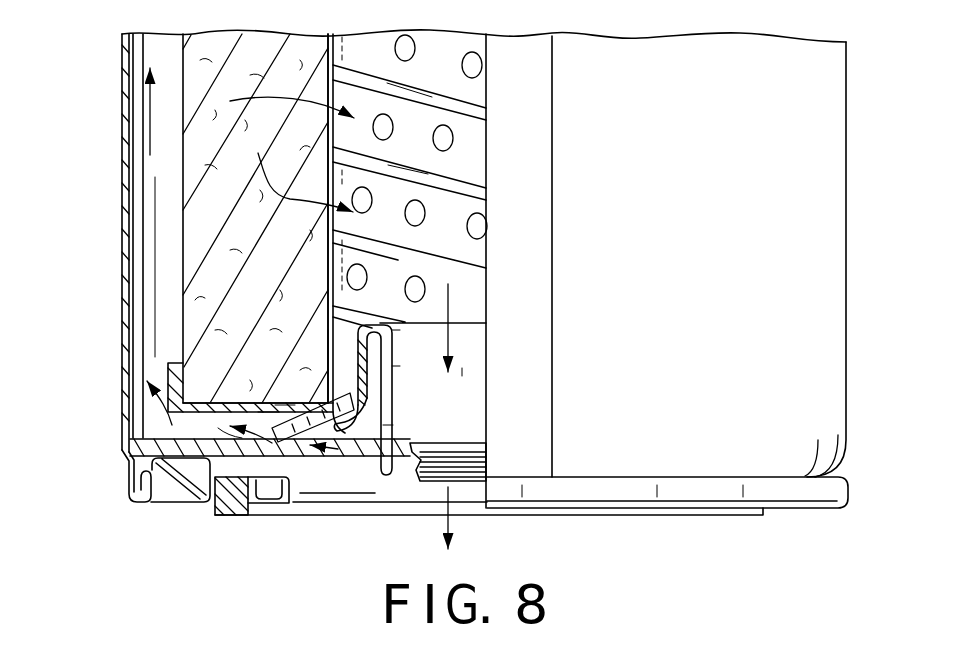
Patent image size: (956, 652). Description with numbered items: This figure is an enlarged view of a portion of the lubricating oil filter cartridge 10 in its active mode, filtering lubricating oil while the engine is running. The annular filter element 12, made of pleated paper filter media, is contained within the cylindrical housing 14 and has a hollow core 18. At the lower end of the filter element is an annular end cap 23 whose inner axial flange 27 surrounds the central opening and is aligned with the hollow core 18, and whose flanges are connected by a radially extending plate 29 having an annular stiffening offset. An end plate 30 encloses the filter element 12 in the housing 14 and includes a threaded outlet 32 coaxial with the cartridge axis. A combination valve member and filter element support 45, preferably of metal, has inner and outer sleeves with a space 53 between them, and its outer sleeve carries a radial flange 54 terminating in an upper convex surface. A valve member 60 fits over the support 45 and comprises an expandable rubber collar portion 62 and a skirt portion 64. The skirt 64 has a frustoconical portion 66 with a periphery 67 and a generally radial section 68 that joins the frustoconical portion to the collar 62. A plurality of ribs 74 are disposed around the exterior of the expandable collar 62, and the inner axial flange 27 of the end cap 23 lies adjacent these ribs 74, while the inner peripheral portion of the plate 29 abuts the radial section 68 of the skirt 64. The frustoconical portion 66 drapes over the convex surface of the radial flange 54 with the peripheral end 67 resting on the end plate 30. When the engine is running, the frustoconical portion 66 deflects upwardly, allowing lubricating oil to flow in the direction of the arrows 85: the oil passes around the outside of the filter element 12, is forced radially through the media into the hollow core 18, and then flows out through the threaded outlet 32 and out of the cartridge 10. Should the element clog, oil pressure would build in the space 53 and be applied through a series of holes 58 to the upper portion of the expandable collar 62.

The lubricating oil filter cartridge 10 is at (117, 149).
The annular filter element 12 is at (122, 215).
The cylindrical housing 14 is at (633, 241).
The hollow core 18 is at (340, 259).
The annular end cap 23 is at (235, 399).
The inner axial flange 27 is at (310, 413).
The radially extending plate 29 is at (283, 399).
The end plate 30 is at (157, 436).
The threaded outlet 32 is at (479, 447).
The combination valve member and filter element support 45 is at (476, 373).
The space 53 is at (383, 386).
The radial flange 54 is at (383, 425).
The holes 58 is at (393, 353).
The valve member 60 is at (363, 317).
The expandable collar portion 62 is at (396, 335).
The skirt portion 64 is at (267, 412).
The frustoconical portion 66 is at (318, 466).
The periphery 67 is at (232, 434).
The radial section 68 is at (318, 400).
The ribs 74 is at (330, 366).
The arrows 85 is at (122, 97).